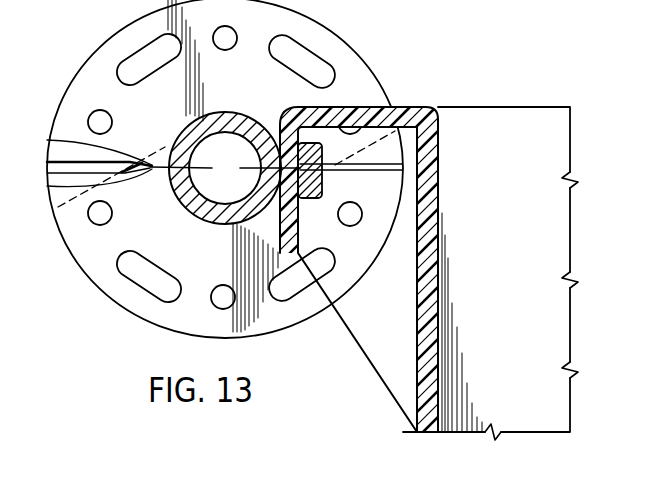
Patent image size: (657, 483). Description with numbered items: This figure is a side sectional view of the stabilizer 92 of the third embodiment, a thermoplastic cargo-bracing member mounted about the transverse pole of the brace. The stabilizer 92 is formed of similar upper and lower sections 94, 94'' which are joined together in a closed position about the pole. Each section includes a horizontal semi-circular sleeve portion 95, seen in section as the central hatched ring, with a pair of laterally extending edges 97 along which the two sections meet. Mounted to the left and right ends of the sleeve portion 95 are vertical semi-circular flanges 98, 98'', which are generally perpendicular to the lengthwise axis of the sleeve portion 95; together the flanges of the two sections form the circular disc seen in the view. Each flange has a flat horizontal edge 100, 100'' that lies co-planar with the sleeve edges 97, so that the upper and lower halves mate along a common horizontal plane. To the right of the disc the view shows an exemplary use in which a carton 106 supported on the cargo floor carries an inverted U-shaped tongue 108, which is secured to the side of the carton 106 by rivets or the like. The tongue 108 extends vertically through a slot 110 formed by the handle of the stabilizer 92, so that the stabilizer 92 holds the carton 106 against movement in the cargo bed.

The stabilizer 92 is at (83, 61).
The upper section 94 is at (211, 169).
The left vertical semi-circular flange 98 is at (211, 169).
The lower section 94'' is at (99, 227).
The right vertical semi-circular flange 98'' is at (99, 227).
The flat horizontal edge 100 is at (203, 179).
The flat horizontal edge 100'' is at (79, 154).
The horizontal semi-circular sleeve portion 95 is at (185, 130).
The laterally extending edges 97 is at (225, 168).
The inverted U-shaped tongue 108 is at (292, 226).
The slot 110 is at (318, 203).
The carton 106 is at (570, 137).